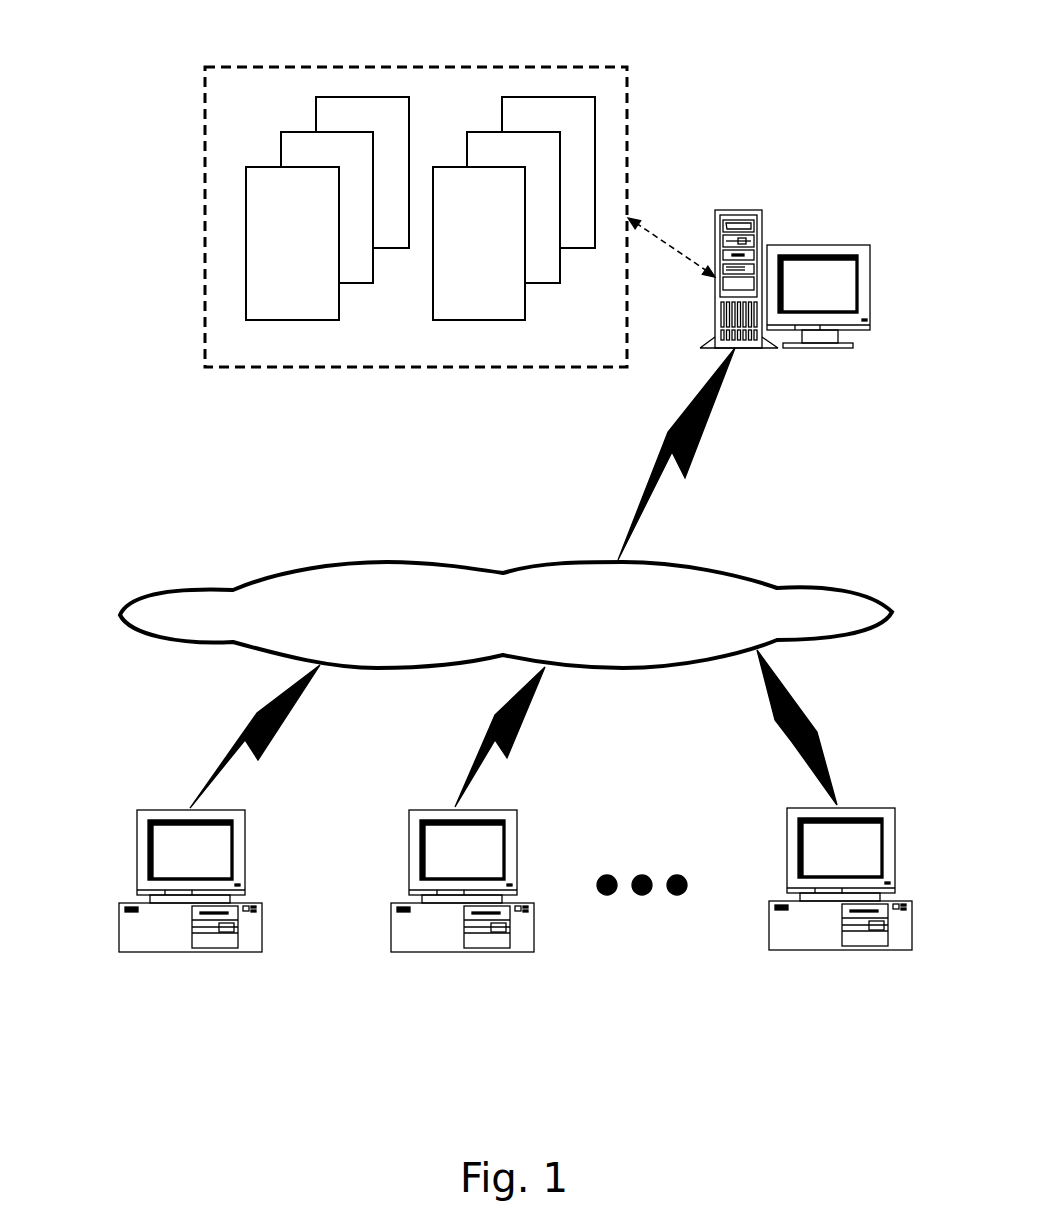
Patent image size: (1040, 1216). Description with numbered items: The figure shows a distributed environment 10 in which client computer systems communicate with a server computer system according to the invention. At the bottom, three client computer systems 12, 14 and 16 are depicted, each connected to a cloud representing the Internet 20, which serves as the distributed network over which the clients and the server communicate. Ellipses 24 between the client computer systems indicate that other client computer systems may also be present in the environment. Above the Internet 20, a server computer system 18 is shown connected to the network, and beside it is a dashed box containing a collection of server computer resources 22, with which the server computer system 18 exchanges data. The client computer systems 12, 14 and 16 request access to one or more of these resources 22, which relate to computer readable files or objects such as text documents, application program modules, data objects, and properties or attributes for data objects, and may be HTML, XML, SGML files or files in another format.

The distributed environment 10 is at (790, 94).
The client computer system 12 is at (119, 917).
The client computer system 14 is at (393, 917).
The client computer system 16 is at (768, 915).
The server computer system 18 is at (818, 245).
The Internet 20 is at (390, 562).
The server computer resources 22 is at (415, 67).
The ellipses 24 is at (642, 876).